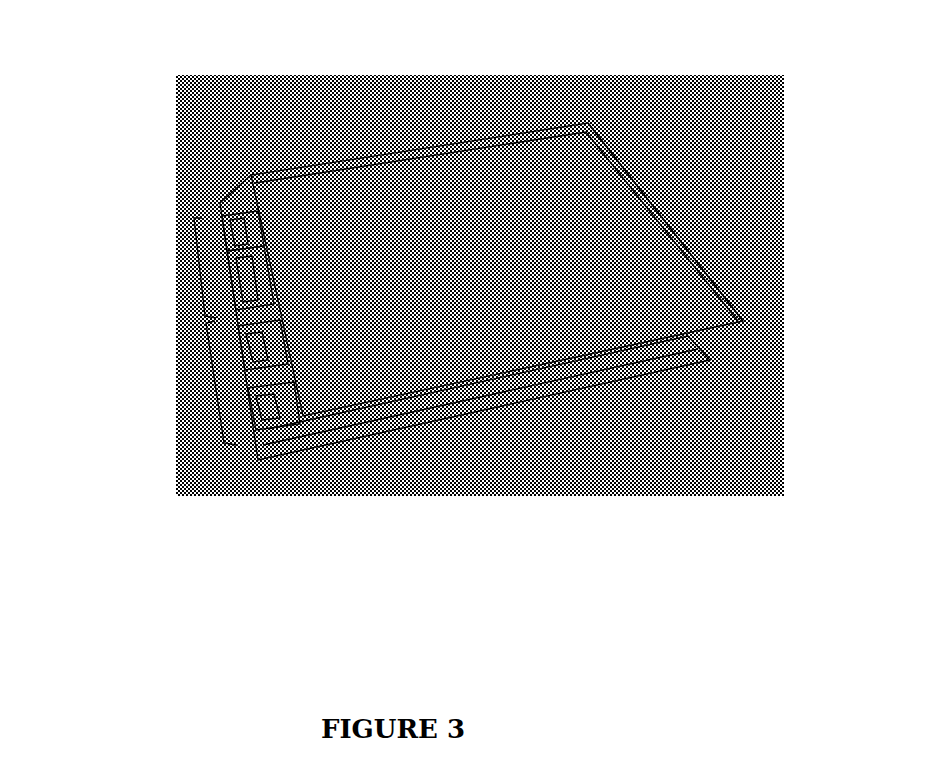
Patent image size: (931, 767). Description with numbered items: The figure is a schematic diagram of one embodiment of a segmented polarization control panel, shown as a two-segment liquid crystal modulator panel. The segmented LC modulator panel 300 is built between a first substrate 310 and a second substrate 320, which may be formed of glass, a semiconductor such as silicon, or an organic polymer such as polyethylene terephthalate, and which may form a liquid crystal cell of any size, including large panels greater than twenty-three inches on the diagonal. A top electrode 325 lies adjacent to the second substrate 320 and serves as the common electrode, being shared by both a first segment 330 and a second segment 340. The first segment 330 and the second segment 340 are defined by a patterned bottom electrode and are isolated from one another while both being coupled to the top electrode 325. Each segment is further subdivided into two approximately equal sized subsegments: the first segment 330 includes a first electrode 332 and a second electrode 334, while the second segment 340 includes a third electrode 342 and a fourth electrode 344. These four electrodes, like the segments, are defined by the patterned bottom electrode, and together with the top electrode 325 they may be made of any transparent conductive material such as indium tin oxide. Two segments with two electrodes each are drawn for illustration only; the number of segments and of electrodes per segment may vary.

The segmented LC modulator panel 300 is at (140, 630).
The first substrate 310 is at (581, 367).
The second substrate 320 is at (387, 178).
The top electrode 325 is at (697, 250).
The first segment 330 is at (118, 268).
The first electrode 332 is at (227, 205).
The second electrode 334 is at (240, 272).
The second segment 340 is at (128, 383).
The third electrode 342 is at (249, 353).
The fourth electrode 344 is at (255, 404).